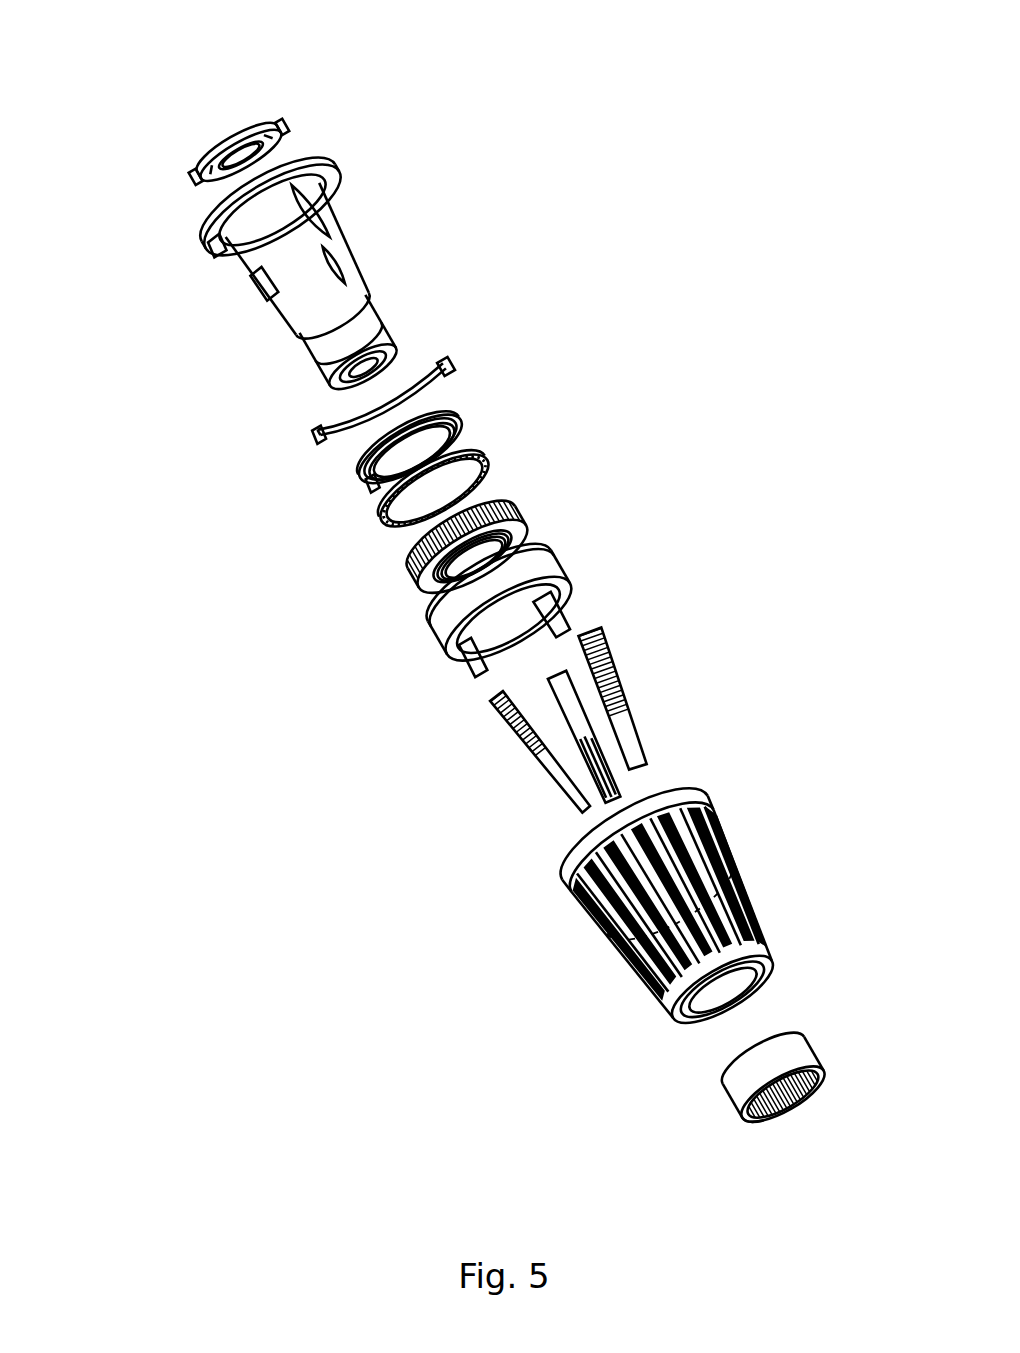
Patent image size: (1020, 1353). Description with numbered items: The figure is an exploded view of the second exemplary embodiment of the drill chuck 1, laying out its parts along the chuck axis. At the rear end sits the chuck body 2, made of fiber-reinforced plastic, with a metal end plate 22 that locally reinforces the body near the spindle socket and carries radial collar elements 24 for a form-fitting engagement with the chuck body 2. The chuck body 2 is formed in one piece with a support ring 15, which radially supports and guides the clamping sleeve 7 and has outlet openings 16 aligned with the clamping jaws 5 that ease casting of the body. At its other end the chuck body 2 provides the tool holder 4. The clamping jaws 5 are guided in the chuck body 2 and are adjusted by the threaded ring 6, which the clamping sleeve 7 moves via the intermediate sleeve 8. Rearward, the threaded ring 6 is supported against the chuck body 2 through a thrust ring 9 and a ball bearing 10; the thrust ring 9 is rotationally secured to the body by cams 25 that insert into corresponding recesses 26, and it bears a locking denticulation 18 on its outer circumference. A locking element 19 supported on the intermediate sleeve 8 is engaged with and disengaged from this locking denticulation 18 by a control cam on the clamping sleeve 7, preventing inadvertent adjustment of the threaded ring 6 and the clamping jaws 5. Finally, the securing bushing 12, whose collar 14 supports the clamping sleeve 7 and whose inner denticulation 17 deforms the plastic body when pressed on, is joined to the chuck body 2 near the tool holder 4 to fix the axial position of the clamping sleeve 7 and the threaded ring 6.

The drill chuck 1 is at (518, 290).
The chuck body 2 is at (347, 233).
The tool holder 4 is at (353, 370).
The clamping jaws 5 is at (523, 730).
The threaded ring 6 is at (422, 578).
The clamping sleeve 7 is at (622, 915).
The intermediate sleeve 8 is at (457, 647).
The thrust ring 9 is at (385, 468).
The ball bearing 10 is at (477, 455).
The securing bushing 12 is at (797, 1047).
The collar 14 is at (752, 1110).
The support ring 15 is at (217, 237).
The outlet openings 16 is at (330, 196).
The denticulation 17 is at (783, 1098).
The locking denticulation 18 is at (363, 478).
The locking element 19 is at (430, 390).
The end plate 22 is at (255, 130).
The radial collar elements 24 is at (227, 140).
The cams 25 is at (392, 508).
The recesses 26 is at (293, 271).